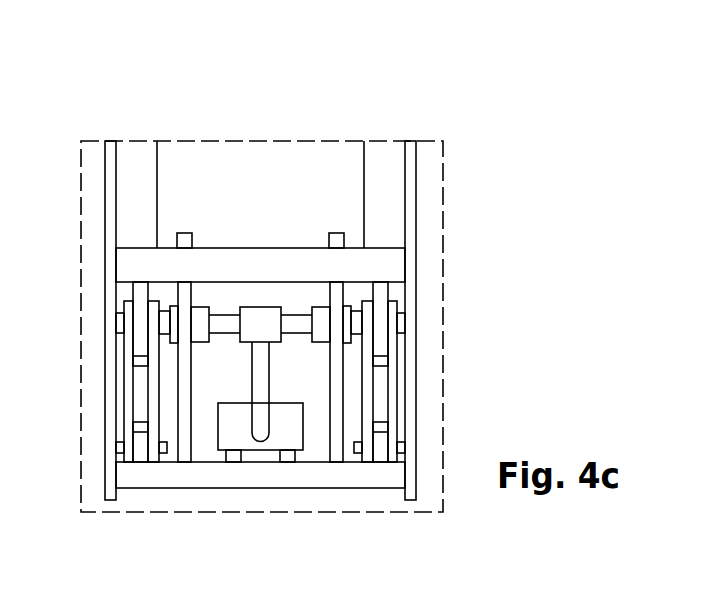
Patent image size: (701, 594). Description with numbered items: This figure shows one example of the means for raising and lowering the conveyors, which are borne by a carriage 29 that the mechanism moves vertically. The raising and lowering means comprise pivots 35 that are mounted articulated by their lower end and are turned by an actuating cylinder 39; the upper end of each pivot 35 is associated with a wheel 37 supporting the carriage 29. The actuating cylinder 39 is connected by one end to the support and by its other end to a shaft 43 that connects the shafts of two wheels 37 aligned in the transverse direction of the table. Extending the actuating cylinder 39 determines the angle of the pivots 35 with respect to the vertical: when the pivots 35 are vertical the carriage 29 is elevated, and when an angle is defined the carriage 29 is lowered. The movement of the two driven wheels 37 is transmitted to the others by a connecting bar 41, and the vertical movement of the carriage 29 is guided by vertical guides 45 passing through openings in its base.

The carriage 29 is at (132, 170).
The pivot 35 is at (138, 394).
The wheel 37 is at (144, 312).
The actuating cylinder 39 is at (237, 432).
The connecting bar 41 is at (167, 323).
The shaft 43 is at (297, 323).
The vertical guide 45 is at (186, 453).